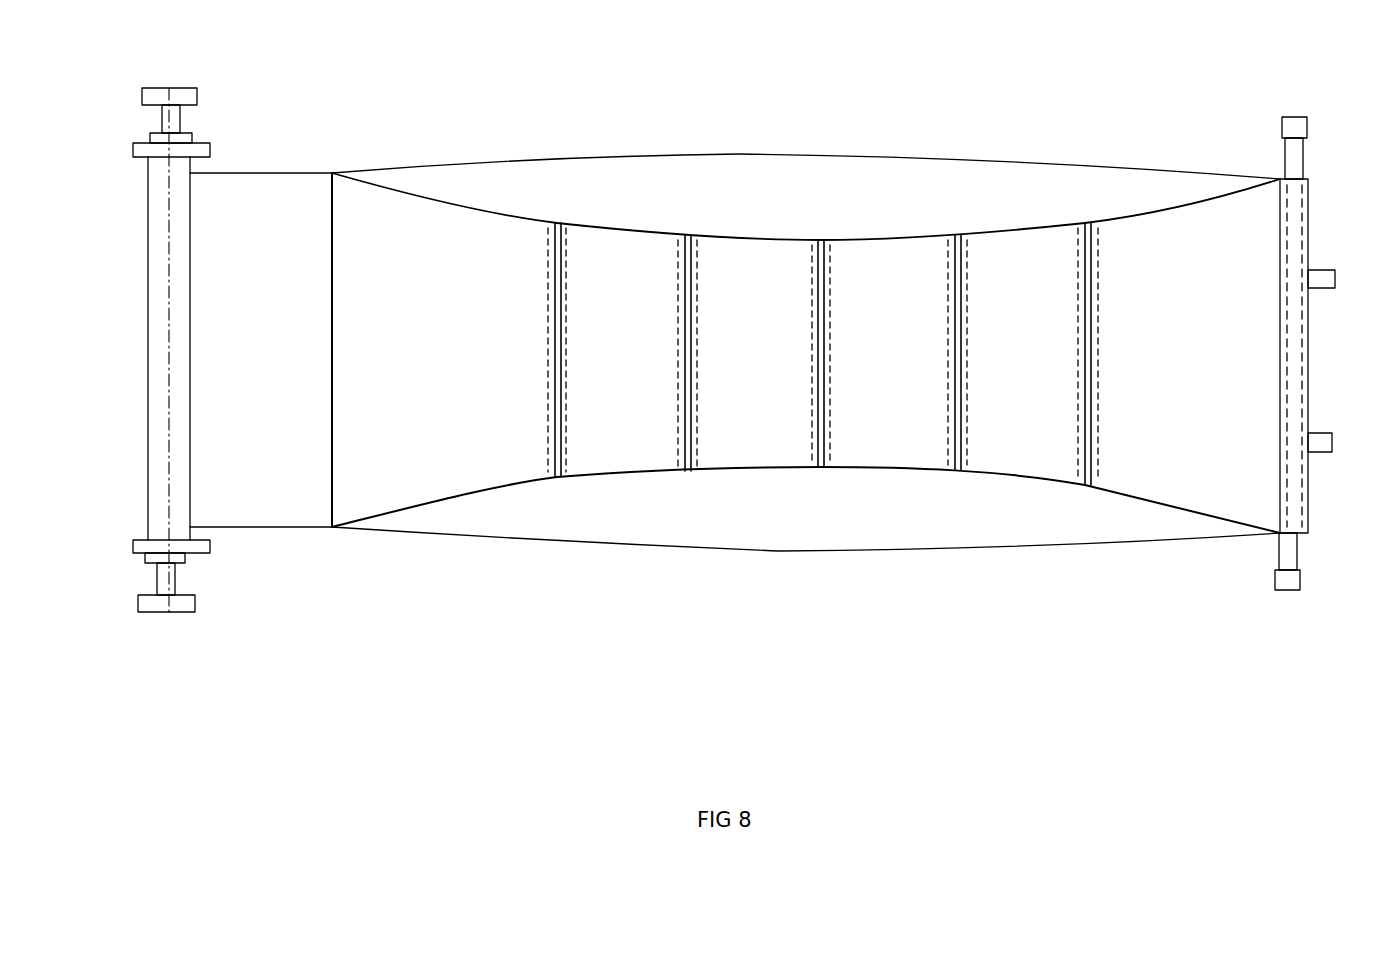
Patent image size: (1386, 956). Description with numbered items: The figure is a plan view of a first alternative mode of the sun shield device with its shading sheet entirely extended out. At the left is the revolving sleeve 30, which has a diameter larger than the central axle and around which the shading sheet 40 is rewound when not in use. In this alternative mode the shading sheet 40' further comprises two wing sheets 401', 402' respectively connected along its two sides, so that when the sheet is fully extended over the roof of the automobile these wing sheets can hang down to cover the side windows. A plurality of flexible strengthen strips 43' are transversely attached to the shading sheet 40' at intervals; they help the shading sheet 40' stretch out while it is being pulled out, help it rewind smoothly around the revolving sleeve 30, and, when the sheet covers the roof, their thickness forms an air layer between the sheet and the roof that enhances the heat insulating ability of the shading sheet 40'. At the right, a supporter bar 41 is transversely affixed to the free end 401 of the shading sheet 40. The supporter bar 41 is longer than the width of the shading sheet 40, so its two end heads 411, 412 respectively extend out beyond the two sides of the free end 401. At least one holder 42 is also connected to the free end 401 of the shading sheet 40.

The revolving sleeve 30 is at (160, 452).
The shading sheet 40 is at (205, 350).
The shading sheet 40' is at (806, 353).
The wing sheet 401' is at (806, 542).
The wing sheet 402' is at (806, 176).
The strengthen strips 43' is at (823, 354).
The supporter bar 41 is at (1284, 335).
The free end 401 is at (1327, 356).
The end head 411 is at (1278, 583).
The end head 412 is at (1282, 128).
The holder 42 is at (1322, 280).